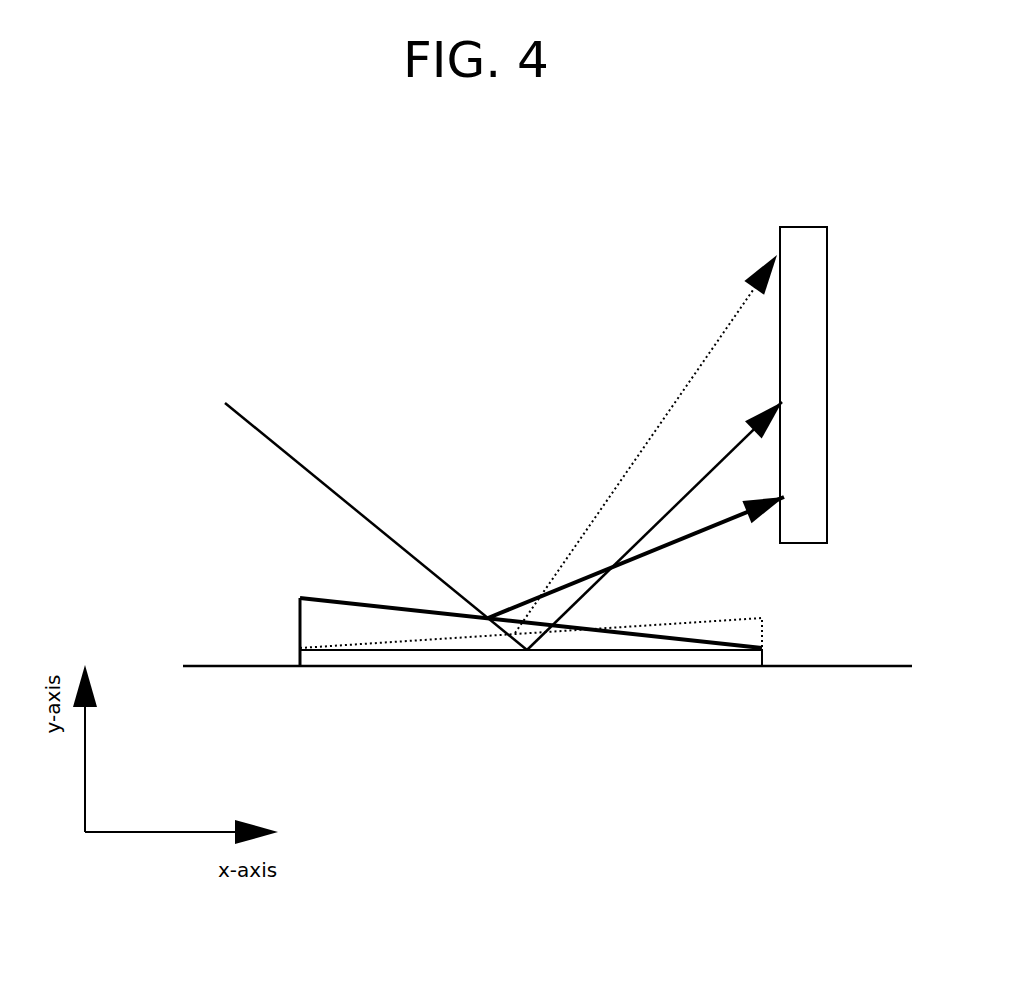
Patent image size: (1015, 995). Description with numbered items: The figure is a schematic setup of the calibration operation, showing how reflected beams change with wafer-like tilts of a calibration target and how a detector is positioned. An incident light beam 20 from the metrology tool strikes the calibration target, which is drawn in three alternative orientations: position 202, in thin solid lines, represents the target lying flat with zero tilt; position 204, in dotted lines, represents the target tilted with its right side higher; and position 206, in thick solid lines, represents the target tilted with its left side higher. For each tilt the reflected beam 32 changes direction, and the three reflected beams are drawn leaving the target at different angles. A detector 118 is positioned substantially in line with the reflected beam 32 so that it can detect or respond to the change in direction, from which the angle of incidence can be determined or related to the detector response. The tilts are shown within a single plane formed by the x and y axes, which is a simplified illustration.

The incident light beam 20 is at (279, 443).
The reflected beam 32 is at (612, 415).
The detector 118 is at (827, 302).
The position 202 is at (448, 650).
The position 204 is at (732, 618).
The position 206 is at (318, 597).